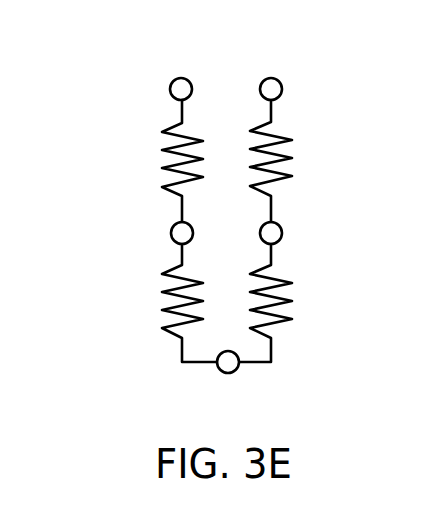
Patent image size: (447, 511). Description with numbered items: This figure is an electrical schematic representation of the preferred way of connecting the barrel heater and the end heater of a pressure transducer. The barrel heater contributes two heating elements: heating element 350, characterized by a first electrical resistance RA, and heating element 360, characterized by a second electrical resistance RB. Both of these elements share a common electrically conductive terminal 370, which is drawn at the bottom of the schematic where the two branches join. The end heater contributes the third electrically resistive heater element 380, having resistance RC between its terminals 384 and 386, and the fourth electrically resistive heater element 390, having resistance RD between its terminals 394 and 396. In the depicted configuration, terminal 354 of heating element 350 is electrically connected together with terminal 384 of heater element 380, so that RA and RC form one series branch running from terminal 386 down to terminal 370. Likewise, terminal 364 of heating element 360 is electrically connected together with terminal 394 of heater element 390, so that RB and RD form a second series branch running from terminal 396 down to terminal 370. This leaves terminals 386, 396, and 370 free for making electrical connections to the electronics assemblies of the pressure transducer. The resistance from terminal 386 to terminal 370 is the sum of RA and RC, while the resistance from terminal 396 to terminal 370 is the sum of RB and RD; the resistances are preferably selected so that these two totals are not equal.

The heating element 350 is at (143, 332).
The electrically conductive terminal 354 is at (144, 233).
The heating element 360 is at (306, 328).
The electrically conductive terminal 364 is at (312, 233).
The electrically conductive terminal 370 is at (228, 373).
The third electrically resistive heater element 380 is at (141, 176).
The electrically conductive terminal 384 is at (171, 234).
The electrically conductive terminal 386 is at (171, 83).
The fourth electrically resistive heater element 390 is at (306, 180).
The electrically conductive terminal 394 is at (282, 233).
The electrically conductive terminal 396 is at (281, 82).